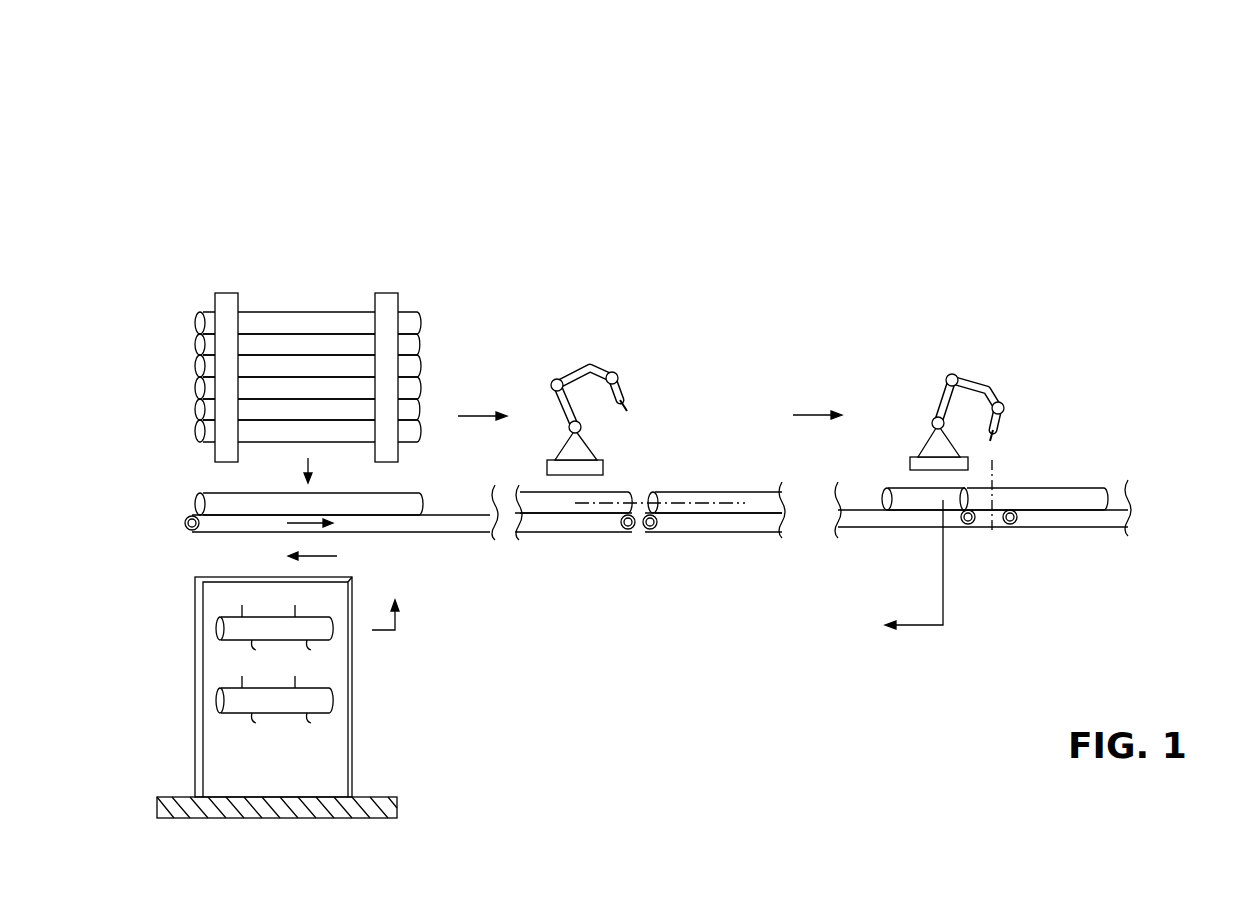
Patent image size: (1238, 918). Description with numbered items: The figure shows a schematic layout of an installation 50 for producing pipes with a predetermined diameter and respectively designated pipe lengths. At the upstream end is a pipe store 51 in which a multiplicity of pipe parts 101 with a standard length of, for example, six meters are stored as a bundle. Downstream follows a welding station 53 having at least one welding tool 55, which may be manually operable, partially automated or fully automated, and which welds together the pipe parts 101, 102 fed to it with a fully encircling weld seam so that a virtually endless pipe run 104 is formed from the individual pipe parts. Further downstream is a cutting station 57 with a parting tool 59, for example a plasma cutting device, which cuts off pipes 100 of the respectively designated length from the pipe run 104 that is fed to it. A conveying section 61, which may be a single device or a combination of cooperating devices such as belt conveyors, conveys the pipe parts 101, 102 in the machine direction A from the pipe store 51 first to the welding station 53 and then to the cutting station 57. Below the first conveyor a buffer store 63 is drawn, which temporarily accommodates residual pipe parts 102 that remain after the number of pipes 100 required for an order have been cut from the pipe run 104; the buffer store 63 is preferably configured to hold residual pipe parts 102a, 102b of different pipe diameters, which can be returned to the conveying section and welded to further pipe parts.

The installation 50 is at (332, 150).
The pipe store 51 is at (233, 250).
The welding station 53 is at (582, 275).
The welding tool 55 is at (578, 375).
The cutting station 57 is at (965, 272).
The parting tool 59 is at (975, 382).
The conveying section 61 is at (1168, 478).
The buffer store 63 is at (448, 808).
The pipe 100 is at (1033, 500).
The pipe part 101 is at (289, 320).
The residual pipe part 102 is at (898, 495).
The residual pipe part 102a is at (335, 628).
The residual pipe part 102b is at (335, 703).
The pipe run 104 is at (810, 587).